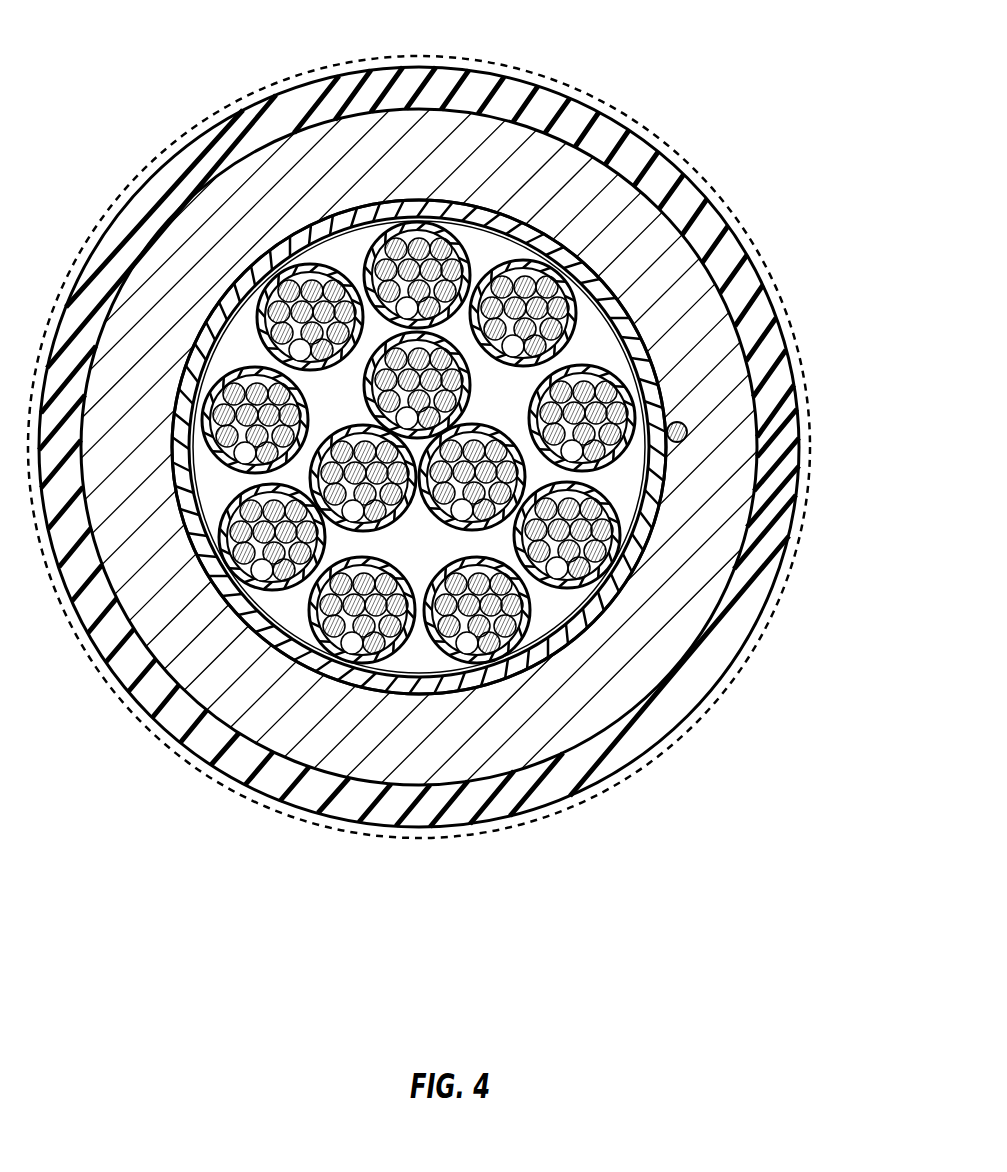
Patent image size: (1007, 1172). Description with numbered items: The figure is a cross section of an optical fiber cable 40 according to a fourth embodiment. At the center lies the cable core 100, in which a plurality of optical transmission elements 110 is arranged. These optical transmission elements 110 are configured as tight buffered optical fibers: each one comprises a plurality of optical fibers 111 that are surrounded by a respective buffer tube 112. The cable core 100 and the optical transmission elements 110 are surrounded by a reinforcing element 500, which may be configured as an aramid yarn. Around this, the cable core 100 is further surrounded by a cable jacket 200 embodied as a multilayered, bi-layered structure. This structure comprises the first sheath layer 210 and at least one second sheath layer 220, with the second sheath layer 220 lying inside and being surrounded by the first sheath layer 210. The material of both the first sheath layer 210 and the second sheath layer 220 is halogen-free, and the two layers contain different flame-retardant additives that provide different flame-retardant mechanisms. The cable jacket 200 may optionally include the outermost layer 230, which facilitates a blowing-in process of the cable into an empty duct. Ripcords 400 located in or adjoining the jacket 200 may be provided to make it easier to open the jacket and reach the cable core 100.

The optical fiber cable 40 is at (680, 73).
The cable core 100 is at (272, 608).
The optical transmission element 110 is at (573, 580).
The optical fibers 111 is at (610, 545).
The buffer tube 112 is at (548, 586).
The cable jacket 200 is at (722, 171).
The first sheath layer 210 is at (740, 247).
The second sheath layer 220 is at (710, 358).
The layer 230 is at (494, 58).
The ripcord 400 is at (688, 431).
The reinforcing element 500 is at (647, 534).